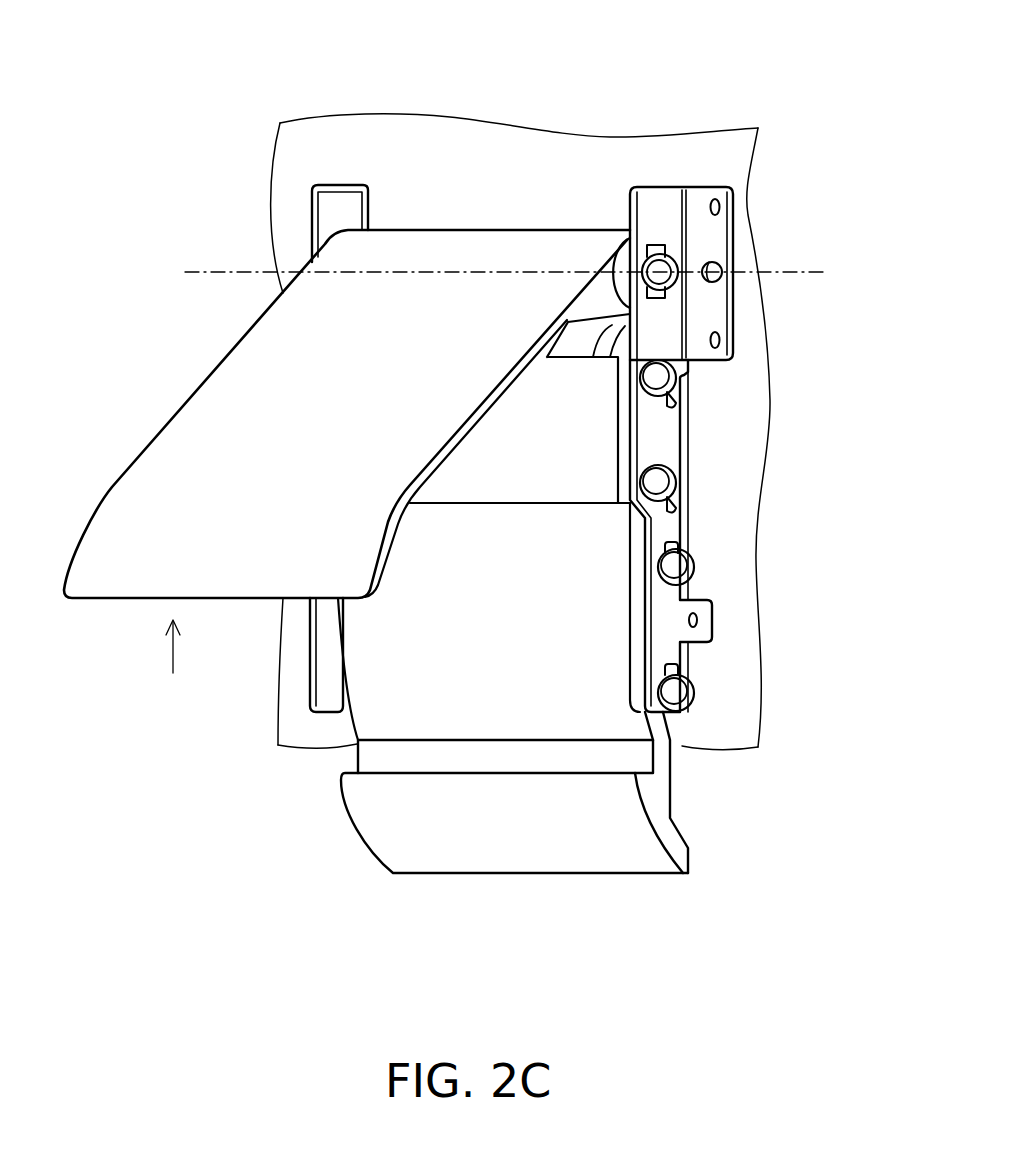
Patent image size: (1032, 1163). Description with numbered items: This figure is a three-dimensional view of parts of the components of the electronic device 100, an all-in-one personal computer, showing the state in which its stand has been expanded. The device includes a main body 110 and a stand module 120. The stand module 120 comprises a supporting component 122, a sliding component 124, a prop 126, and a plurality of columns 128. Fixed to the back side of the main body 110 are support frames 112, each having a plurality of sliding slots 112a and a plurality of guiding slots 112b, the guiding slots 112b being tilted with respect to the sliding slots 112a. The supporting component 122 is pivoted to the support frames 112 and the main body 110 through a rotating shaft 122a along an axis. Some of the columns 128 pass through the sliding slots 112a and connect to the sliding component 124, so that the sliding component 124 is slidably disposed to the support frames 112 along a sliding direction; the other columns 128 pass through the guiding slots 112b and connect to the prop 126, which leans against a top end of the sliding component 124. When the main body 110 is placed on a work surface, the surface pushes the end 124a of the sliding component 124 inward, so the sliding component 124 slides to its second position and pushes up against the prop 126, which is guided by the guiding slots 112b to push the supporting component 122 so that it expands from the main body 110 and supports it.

The electronic device 100 is at (479, 474).
The main body 110 is at (848, 163).
The support frame 112 is at (242, 192).
The sliding slot 112a is at (813, 602).
The guiding slot 112b is at (813, 407).
The stand module 120 is at (541, 721).
The supporting component 122 is at (172, 465).
The rotating shaft 122a is at (775, 222).
The sliding component 124 is at (667, 750).
The end 124a is at (730, 866).
The prop 126 is at (800, 354).
The column 128 is at (683, 693).